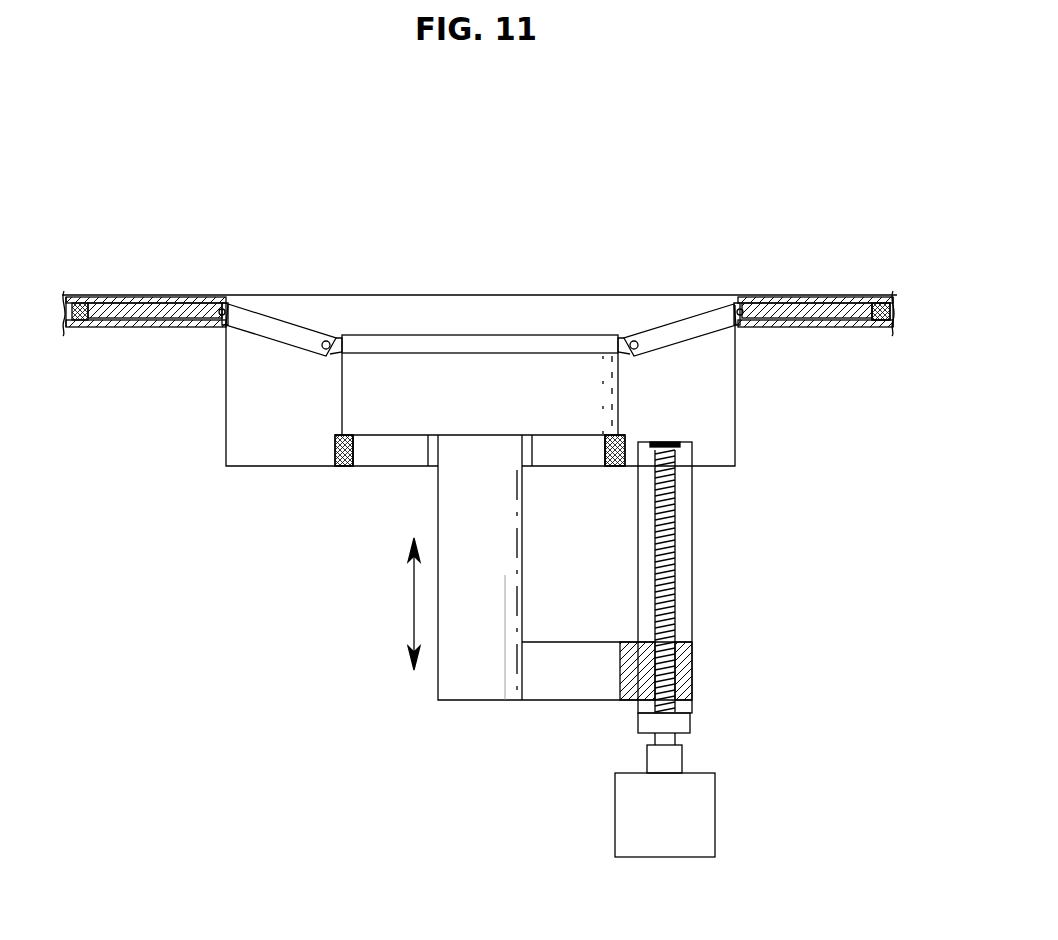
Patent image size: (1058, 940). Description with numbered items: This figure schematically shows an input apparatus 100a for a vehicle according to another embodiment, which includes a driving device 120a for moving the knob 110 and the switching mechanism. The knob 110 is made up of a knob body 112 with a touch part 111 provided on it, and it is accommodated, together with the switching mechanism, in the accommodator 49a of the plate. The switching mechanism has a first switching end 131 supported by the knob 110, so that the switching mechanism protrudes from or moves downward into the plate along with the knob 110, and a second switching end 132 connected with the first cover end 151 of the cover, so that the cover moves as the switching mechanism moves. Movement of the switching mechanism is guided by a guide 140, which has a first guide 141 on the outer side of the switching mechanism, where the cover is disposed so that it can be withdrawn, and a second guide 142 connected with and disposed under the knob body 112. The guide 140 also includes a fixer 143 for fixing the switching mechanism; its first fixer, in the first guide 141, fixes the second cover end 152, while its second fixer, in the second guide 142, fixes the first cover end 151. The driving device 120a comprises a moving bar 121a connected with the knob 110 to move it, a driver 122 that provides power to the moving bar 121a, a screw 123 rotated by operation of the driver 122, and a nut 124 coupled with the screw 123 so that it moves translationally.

The input apparatus 100a is at (333, 131).
The knob 110 is at (517, 230).
The touch part 111 is at (428, 347).
The knob body 112 is at (510, 380).
The driving device 120a is at (712, 589).
The moving bar 121a is at (482, 690).
The driver 122 is at (678, 850).
The screw 123 is at (678, 487).
The nut 124 is at (690, 675).
The first switching end 131 is at (345, 338).
The second switching end 132 is at (230, 300).
The guide 140 is at (207, 523).
The first guide 141 is at (141, 328).
The second guide 142 is at (375, 440).
The fixer 143 is at (858, 410).
The first cover end 151 is at (737, 312).
The second cover end 152 is at (862, 310).
The accommodator 49a is at (226, 393).